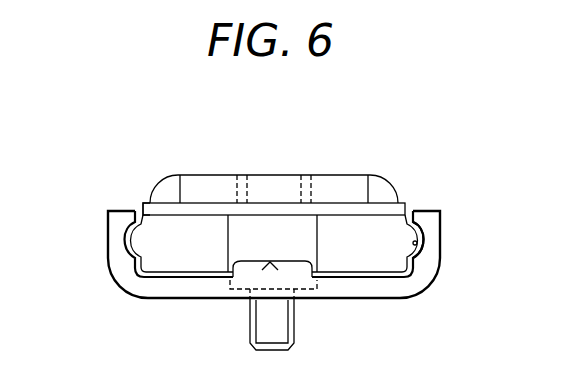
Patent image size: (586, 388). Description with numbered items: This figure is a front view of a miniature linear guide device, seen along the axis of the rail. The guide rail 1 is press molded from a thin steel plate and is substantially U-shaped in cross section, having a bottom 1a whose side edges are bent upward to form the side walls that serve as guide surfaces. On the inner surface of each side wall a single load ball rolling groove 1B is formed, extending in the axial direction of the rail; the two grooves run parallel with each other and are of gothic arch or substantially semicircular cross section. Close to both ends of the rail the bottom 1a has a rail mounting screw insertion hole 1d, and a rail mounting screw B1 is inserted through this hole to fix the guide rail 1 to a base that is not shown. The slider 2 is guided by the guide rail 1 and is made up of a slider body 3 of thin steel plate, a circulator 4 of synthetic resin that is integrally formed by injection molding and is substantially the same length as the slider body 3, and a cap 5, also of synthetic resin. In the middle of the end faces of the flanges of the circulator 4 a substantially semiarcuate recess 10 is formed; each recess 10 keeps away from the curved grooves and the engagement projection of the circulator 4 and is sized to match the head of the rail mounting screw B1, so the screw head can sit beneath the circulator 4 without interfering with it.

The guide rail 1 is at (128, 301).
The bottom 1a is at (192, 266).
The load ball rolling groove 1B is at (417, 240).
The rail mounting screw insertion hole 1d is at (244, 324).
The slider 2 is at (364, 171).
The slider body 3 is at (207, 183).
The circulator 4 is at (138, 238).
The cap 5 is at (150, 203).
The semiarcuate recess 10 is at (273, 233).
The rail mounting screw B1 is at (295, 320).